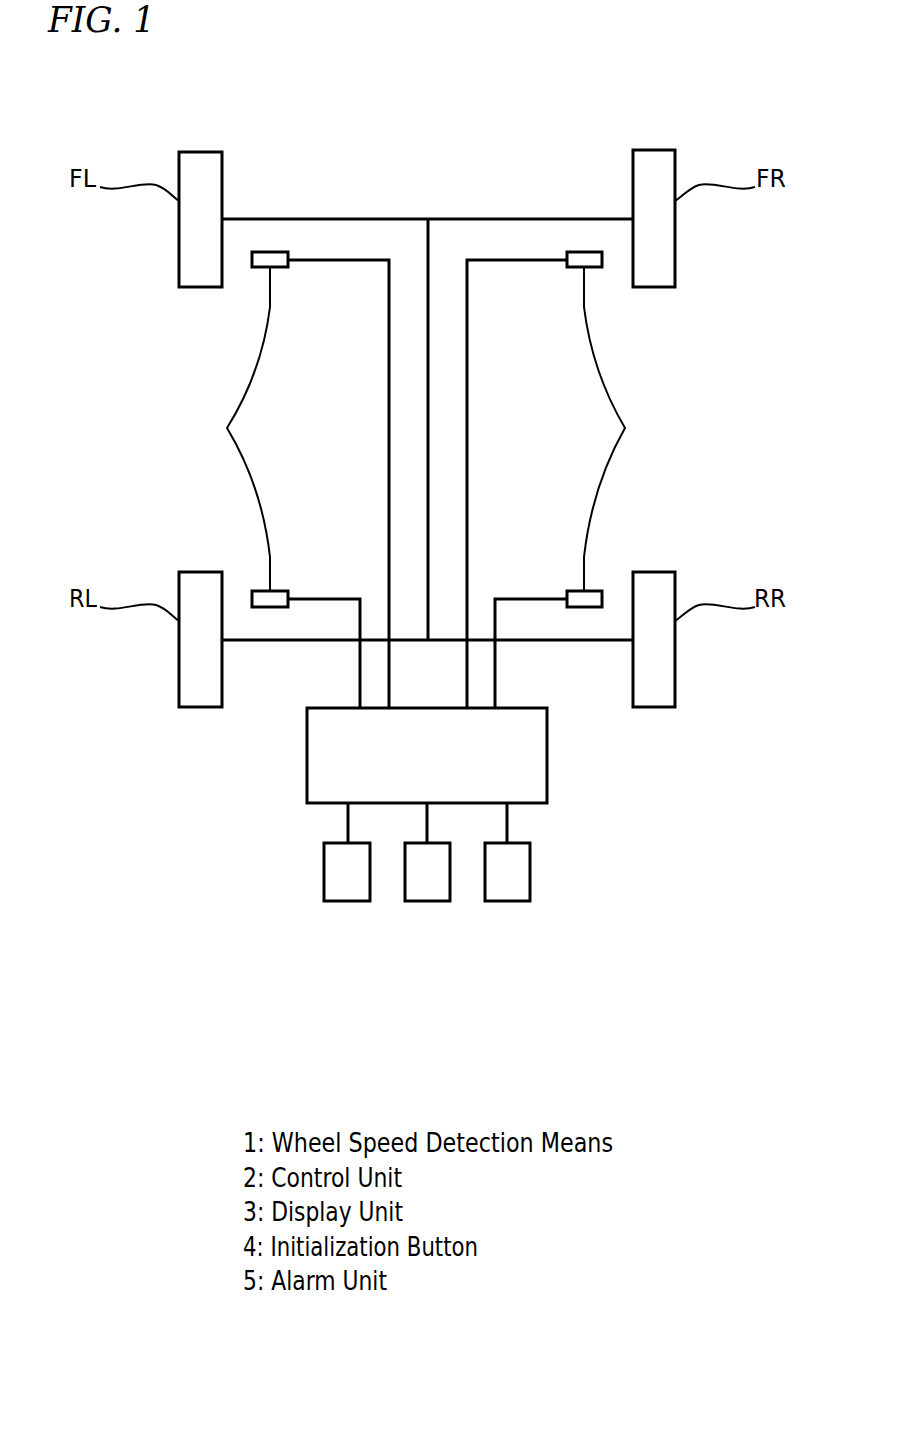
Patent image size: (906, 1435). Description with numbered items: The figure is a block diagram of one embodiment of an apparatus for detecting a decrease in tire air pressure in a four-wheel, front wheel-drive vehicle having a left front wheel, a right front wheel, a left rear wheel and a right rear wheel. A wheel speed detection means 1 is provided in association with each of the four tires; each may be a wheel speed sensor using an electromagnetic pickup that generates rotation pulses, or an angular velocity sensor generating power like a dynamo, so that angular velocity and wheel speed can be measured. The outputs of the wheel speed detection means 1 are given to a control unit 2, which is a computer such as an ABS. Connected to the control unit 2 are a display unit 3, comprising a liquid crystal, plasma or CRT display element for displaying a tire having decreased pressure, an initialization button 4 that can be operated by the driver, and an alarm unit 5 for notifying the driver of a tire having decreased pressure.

The wheel speed detection means 1 is at (428, 480).
The control unit 2 is at (547, 758).
The display unit 3 is at (348, 901).
The initialization button 4 is at (427, 901).
The alarm unit 5 is at (507, 901).